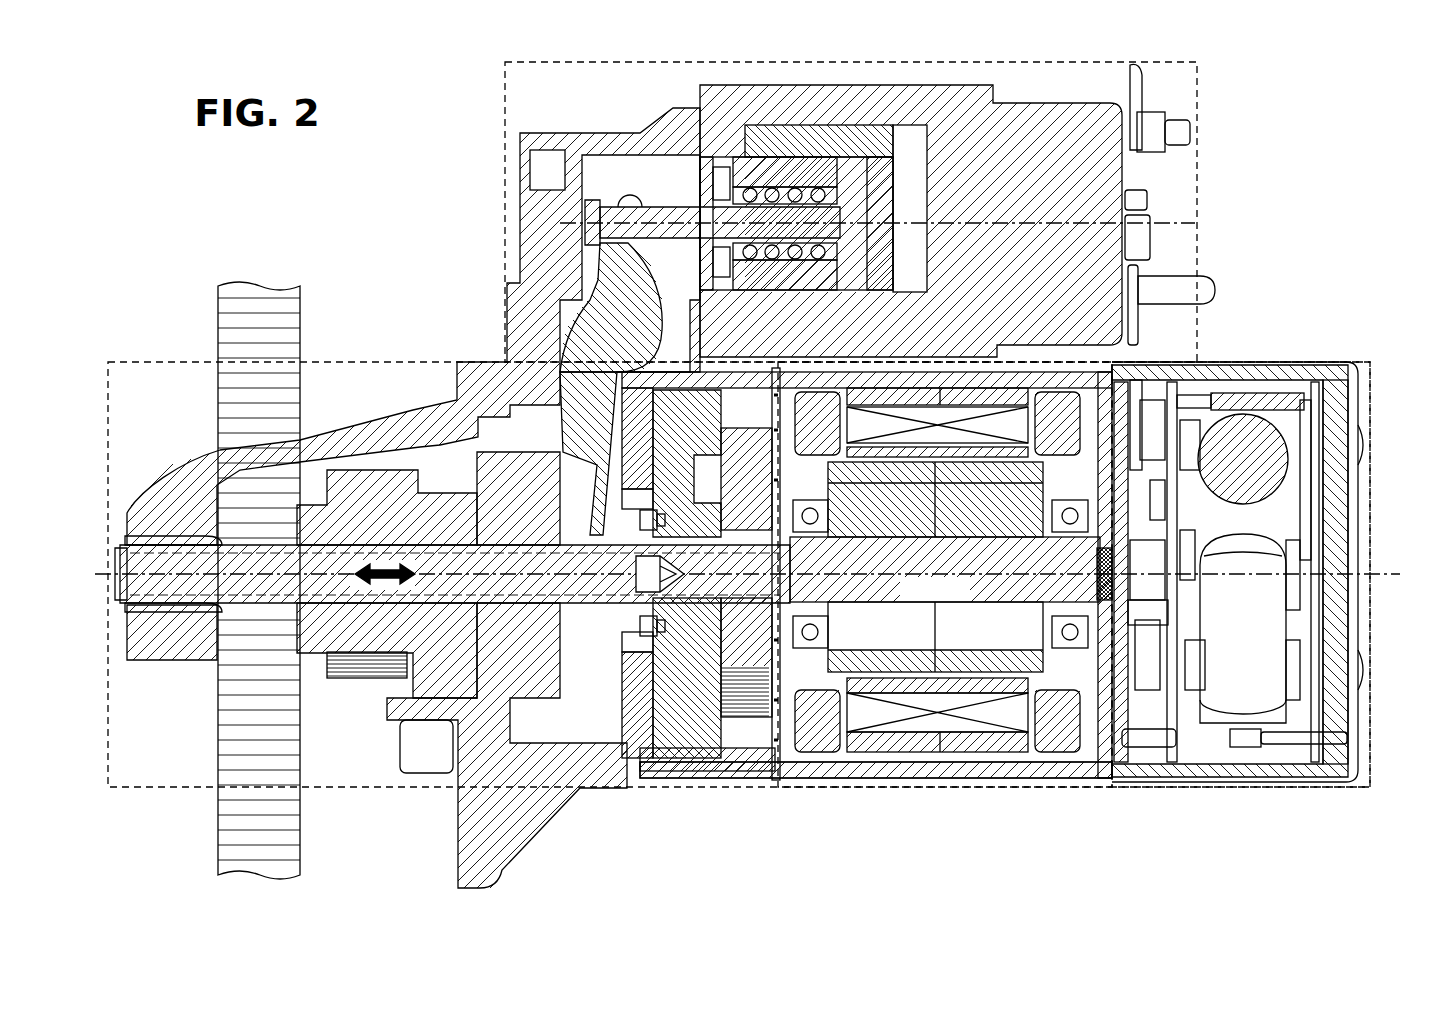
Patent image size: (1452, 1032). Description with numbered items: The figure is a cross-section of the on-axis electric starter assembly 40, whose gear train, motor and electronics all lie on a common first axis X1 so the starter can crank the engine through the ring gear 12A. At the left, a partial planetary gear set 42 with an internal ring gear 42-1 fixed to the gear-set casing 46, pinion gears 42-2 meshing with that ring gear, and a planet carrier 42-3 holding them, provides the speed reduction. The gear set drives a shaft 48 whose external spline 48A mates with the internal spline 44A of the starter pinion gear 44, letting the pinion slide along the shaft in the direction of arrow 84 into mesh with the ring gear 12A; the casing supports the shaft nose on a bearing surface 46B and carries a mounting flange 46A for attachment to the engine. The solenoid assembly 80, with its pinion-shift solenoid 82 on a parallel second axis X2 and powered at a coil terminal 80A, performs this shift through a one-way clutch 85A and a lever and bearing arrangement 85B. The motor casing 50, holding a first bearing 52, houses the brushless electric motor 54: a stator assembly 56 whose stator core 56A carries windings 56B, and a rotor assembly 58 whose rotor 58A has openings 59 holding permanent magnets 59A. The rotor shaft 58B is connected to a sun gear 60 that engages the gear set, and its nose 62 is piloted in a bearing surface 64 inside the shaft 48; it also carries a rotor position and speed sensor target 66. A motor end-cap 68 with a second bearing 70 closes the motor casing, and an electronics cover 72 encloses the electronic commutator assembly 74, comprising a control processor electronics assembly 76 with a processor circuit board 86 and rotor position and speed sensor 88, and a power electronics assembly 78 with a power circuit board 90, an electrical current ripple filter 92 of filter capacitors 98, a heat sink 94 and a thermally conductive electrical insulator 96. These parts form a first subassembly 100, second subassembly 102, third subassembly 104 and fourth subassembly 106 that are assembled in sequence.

The ring gear 12A is at (218, 822).
The starter assembly 40 is at (1302, 102).
The partial planetary gear set 42 is at (676, 700).
The internal ring gear 42-1 is at (748, 700).
The pinion gears 42-2 is at (706, 700).
The planet carrier 42-3 is at (638, 690).
The starter pinion gear 44 is at (355, 680).
The internal spline 44A is at (422, 540).
The gear-set casing 46 is at (540, 824).
The mounting flange 46A is at (447, 835).
The bearing surface 46B is at (142, 622).
The shaft 48 is at (262, 608).
The external spline 48A is at (272, 543).
The motor casing 50 is at (830, 782).
The first bearing 52 is at (800, 506).
The brushless electric motor 54 is at (798, 790).
The stator assembly 56 is at (1058, 700).
The stator core 56A is at (905, 754).
The windings 56B is at (917, 734).
The rotor assembly 58 is at (1092, 782).
The rotor 58A is at (917, 645).
The shaft 58B is at (917, 597).
The openings 59 is at (860, 772).
The permanent magnet 59A is at (995, 764).
The sun gear 60 is at (632, 662).
The nose 62 is at (688, 587).
The bearing surface 64 is at (638, 582).
The rotor position and speed sensor target 66 is at (1139, 448).
The motor end-cap 68 is at (1146, 762).
The second bearing 70 is at (1070, 506).
The electronics cover 72 is at (1306, 782).
The electronic commutator assembly 74 is at (1247, 764).
The control processor electronics assembly 76 is at (1180, 420).
The power electronics assembly 78 is at (1280, 428).
The solenoid assembly 80 is at (936, 104).
The coil terminal 80A is at (1210, 280).
The pinion-shift solenoid 82 is at (775, 165).
The arrow 84 is at (388, 562).
The one-way clutch 85A is at (492, 668).
The lever and bearing arrangement 85B is at (588, 300).
The processor circuit board 86 is at (1202, 430).
The rotor position and speed sensor 88 is at (1172, 632).
The power circuit board 90 is at (1302, 626).
The electrical current ripple filter 92 is at (1272, 657).
The heat sink 94 is at (1342, 508).
The thermally conductive electrical insulator 96 is at (1356, 382).
The filter capacitors 98 is at (1230, 639).
The first subassembly 100 is at (362, 356).
The second subassembly 102 is at (1090, 54).
The third subassembly 104 is at (927, 794).
The fourth subassembly 106 is at (1324, 356).
The first axis X1 is at (1382, 582).
The second axis X2 is at (1185, 228).